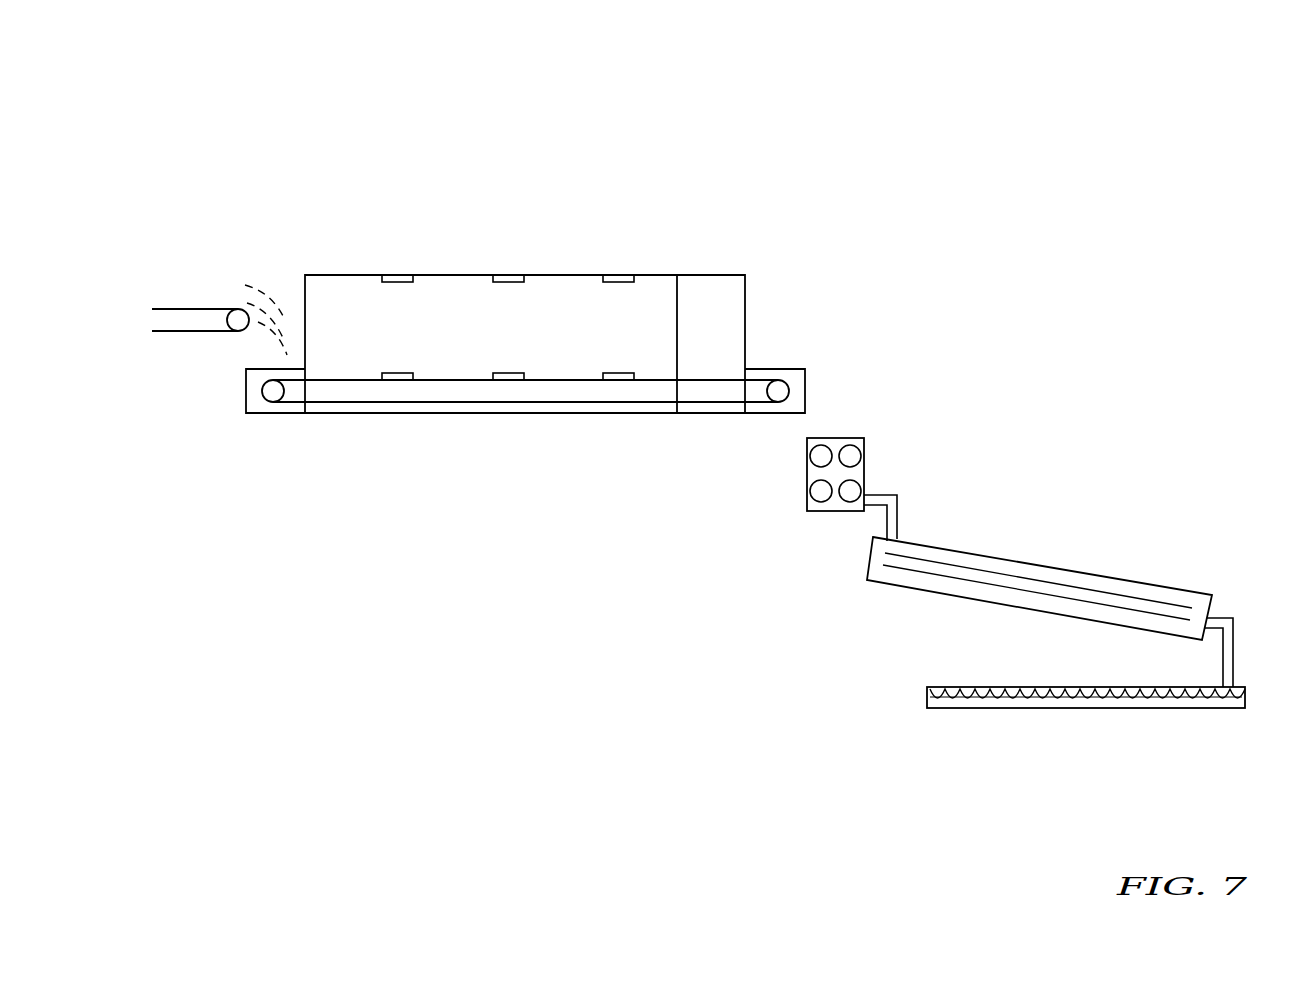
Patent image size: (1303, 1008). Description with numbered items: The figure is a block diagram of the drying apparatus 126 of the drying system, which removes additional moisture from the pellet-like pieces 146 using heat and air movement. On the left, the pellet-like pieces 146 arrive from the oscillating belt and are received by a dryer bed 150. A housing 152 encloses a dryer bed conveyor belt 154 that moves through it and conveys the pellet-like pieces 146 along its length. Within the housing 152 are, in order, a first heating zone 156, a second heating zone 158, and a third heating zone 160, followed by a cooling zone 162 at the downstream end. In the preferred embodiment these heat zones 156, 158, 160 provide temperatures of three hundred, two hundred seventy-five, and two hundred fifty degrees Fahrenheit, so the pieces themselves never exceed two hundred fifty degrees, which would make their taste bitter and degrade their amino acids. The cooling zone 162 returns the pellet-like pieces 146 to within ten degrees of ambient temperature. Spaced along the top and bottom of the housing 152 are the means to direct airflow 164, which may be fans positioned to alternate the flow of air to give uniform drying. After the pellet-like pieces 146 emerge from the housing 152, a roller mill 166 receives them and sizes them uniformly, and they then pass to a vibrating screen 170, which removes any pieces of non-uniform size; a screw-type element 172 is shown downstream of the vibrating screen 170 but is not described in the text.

The drying apparatus 126 is at (384, 111).
The pellet-like pieces 146 is at (258, 288).
The dryer bed 150 is at (293, 379).
The housing 152 is at (323, 273).
The dryer bed conveyor belt 154 is at (450, 397).
The heating zone 156 is at (337, 292).
The heating zone 158 is at (450, 293).
The heating zone 160 is at (559, 293).
The cooling zone 162 is at (715, 292).
The means to direct airflow 164 is at (394, 278).
The roller mill 166 is at (837, 435).
The vibrating screen 170 is at (972, 553).
The screw conveyor 172 is at (1237, 643).